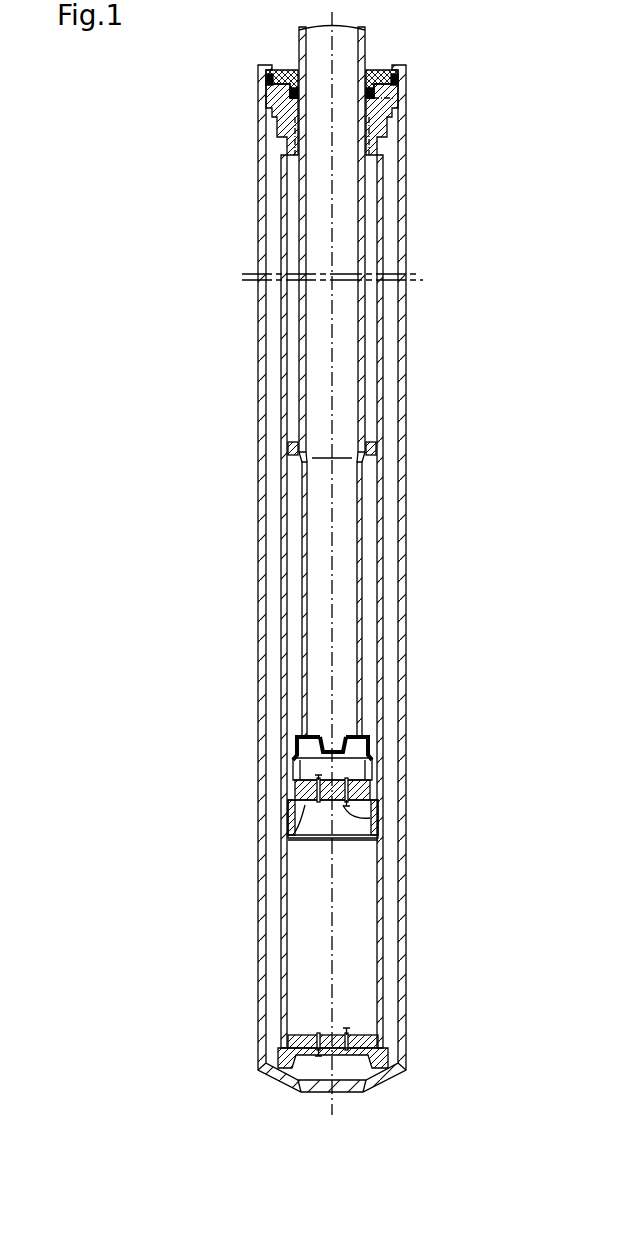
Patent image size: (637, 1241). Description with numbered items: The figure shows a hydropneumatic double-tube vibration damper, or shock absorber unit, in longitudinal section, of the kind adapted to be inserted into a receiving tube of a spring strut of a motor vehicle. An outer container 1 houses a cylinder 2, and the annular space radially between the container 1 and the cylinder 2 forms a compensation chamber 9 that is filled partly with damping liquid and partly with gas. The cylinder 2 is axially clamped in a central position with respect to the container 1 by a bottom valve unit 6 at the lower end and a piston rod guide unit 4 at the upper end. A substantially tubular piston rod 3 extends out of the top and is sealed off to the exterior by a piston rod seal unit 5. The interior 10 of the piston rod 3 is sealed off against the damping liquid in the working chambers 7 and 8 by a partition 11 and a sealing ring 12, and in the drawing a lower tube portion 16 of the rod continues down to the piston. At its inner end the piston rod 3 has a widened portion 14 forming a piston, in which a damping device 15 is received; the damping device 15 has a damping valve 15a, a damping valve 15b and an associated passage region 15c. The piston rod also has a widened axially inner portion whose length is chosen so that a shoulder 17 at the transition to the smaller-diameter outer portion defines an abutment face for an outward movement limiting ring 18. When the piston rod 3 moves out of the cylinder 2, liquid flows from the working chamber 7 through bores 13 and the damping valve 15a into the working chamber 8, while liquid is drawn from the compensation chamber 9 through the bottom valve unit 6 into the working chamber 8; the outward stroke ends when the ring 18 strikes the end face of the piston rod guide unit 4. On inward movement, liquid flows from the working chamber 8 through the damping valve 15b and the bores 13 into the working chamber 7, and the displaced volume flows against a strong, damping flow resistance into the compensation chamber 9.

The container 1 is at (262, 427).
The cylinder 2 is at (383, 413).
The piston rod 3 is at (356, 343).
The piston rod guide unit 4 is at (266, 107).
The piston rod seal unit 5 is at (397, 83).
The bottom valve unit 6 is at (293, 1040).
The working chamber 7 is at (288, 566).
The working chamber 8 is at (372, 1002).
The compensation chamber 9 is at (393, 517).
The interior of the piston rod 10 is at (320, 373).
The partition 11 is at (353, 735).
The sealing ring 12 is at (368, 740).
The bores 13 is at (297, 757).
The widened portion 14 is at (375, 787).
The damping device 15 is at (295, 787).
The damping valve 15a is at (378, 817).
The damping valve 15b is at (290, 818).
The valve passage 15c is at (340, 803).
The lower tube 16 is at (362, 598).
The shoulder 17 is at (376, 457).
The outward movement limiting ring 18 is at (290, 451).